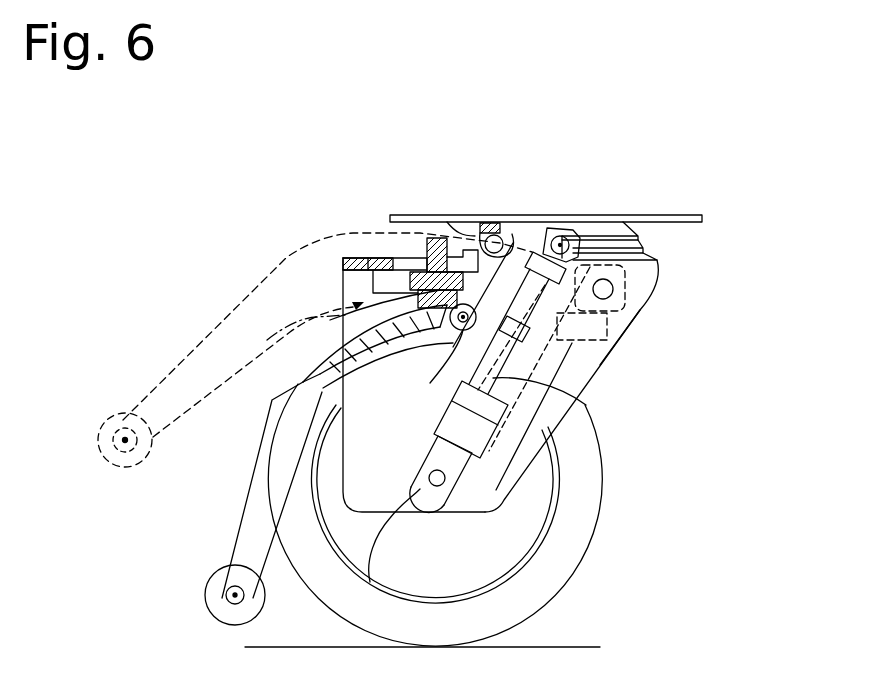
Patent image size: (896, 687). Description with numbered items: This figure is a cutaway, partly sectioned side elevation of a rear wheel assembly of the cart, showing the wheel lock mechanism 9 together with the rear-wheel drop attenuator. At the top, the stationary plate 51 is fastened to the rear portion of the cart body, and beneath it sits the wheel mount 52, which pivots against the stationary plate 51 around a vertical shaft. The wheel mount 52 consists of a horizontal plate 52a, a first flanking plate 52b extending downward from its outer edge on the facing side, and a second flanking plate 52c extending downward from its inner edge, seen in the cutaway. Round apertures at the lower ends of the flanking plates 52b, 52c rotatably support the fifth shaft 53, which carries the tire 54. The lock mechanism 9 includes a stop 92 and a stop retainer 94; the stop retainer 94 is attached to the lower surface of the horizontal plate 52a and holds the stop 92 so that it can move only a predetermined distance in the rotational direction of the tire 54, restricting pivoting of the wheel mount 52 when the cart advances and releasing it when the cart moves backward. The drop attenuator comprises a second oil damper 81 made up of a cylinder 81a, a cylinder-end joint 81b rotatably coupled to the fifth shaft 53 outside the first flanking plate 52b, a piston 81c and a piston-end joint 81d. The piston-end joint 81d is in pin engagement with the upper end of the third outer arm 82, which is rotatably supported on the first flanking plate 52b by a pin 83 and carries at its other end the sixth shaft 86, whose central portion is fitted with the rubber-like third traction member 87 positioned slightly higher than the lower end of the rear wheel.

The lock mechanism 9 is at (356, 171).
The stationary plate 51 is at (712, 217).
The wheel mount 52 is at (662, 296).
The horizontal plate 52a is at (408, 250).
The first flanking plate 52b is at (600, 373).
The second flanking plate 52c is at (343, 287).
The fifth shaft 53 is at (420, 490).
The tire 54 is at (557, 578).
The second oil damper 81 is at (490, 460).
The cylinder 81a is at (600, 418).
The cylinder-end joint 81b is at (349, 612).
The piston 81c is at (600, 353).
The piston-end joint 81d is at (551, 228).
The third outer arm 82 is at (265, 505).
The pin 83 is at (477, 343).
The sixth shaft 86 is at (233, 596).
The third traction member 87 is at (213, 588).
The stop 92 is at (427, 240).
The stop retainer 94 is at (352, 349).